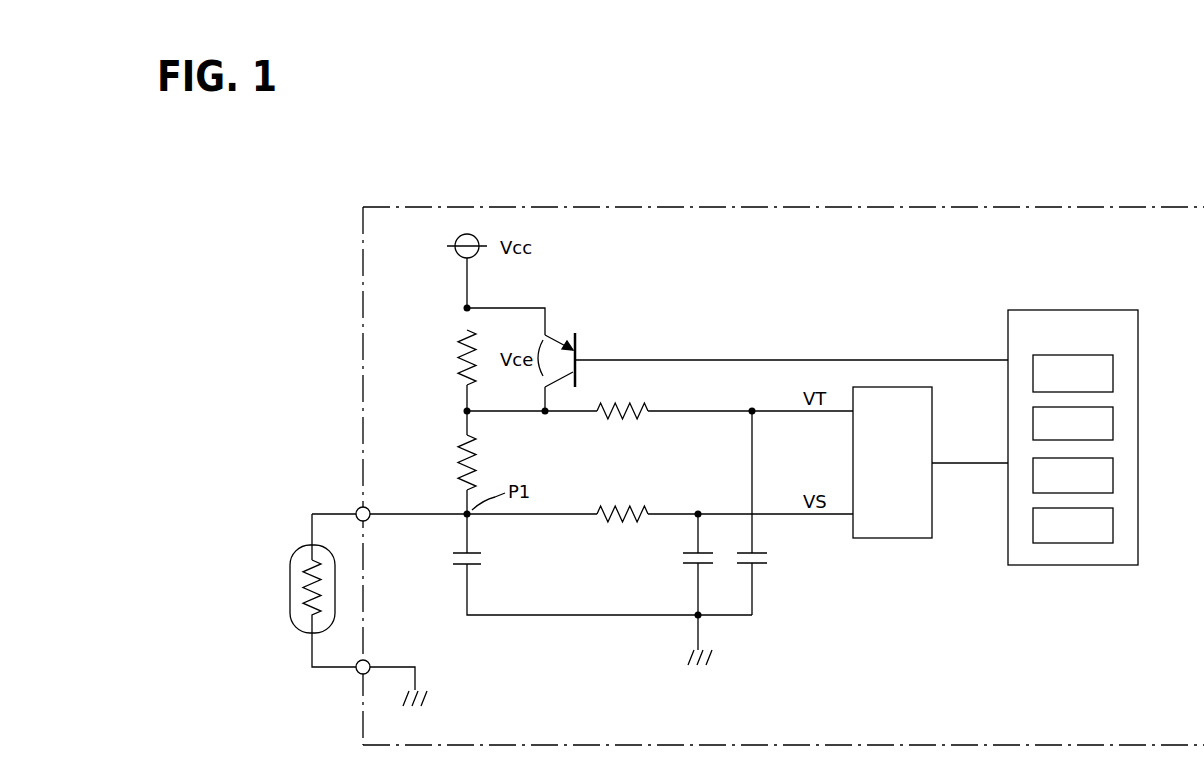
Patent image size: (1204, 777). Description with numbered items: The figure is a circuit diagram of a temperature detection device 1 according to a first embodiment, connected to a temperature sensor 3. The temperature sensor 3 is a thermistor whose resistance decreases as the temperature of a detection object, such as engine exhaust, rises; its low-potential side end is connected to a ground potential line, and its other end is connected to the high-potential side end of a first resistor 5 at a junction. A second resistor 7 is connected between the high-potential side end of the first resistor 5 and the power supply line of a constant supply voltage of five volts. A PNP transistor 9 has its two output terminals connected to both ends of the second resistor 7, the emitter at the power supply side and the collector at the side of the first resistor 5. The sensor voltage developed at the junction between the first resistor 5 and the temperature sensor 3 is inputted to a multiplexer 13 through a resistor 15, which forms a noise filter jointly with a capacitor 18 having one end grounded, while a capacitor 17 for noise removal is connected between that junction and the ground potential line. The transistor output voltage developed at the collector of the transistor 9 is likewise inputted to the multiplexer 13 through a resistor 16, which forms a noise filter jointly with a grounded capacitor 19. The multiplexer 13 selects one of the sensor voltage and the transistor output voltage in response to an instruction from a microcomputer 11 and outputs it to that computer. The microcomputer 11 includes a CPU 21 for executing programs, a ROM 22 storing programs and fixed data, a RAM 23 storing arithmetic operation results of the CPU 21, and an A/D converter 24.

The temperature detection device 1 is at (806, 207).
The temperature sensor 3 is at (292, 578).
The first resistor 5 is at (458, 462).
The second resistor 7 is at (458, 359).
The transistor 9 is at (567, 342).
The microcomputer 11 is at (1063, 310).
The multiplexer 13 is at (910, 538).
The resistor 15 is at (619, 524).
The resistor 16 is at (619, 421).
The capacitor 17 is at (454, 558).
The capacitor 18 is at (684, 563).
The capacitor 19 is at (768, 560).
The CPU 21 is at (1113, 375).
The ROM 22 is at (1113, 425).
The RAM 23 is at (1113, 477).
The A/D converter 24 is at (1113, 528).